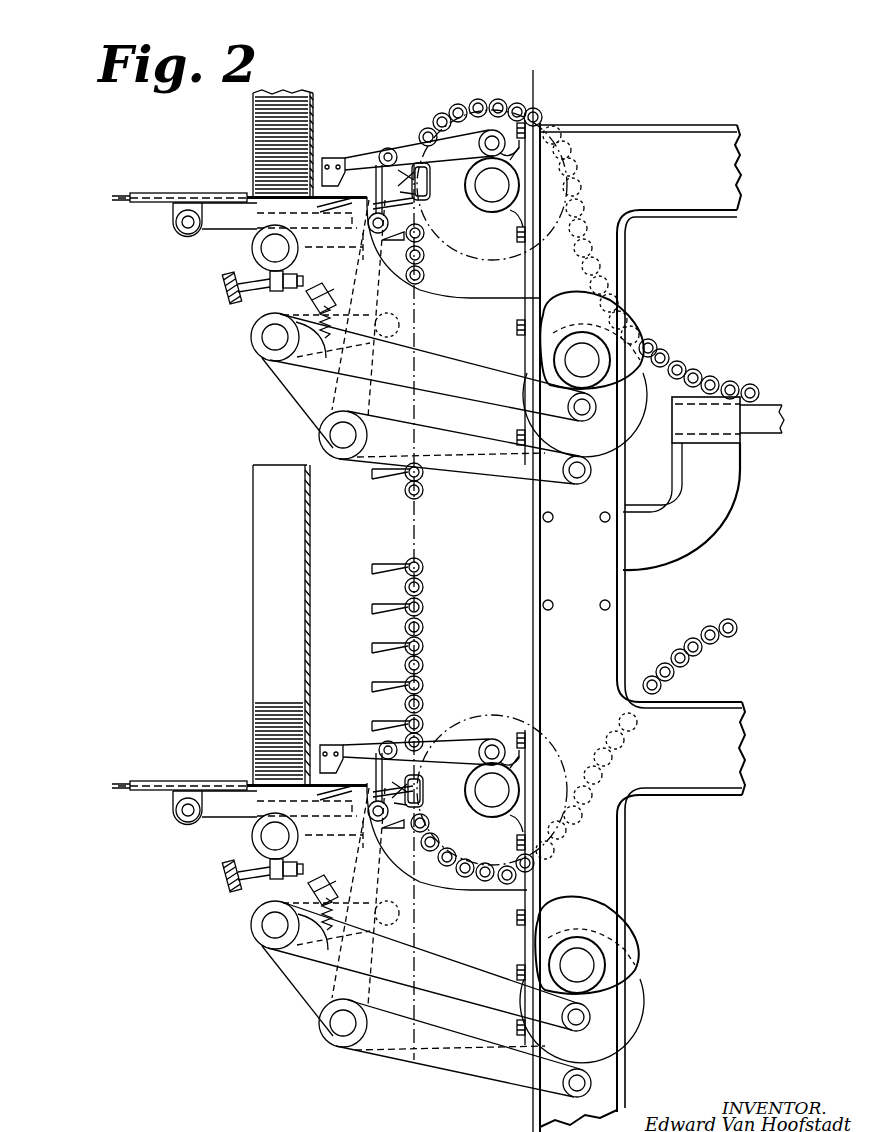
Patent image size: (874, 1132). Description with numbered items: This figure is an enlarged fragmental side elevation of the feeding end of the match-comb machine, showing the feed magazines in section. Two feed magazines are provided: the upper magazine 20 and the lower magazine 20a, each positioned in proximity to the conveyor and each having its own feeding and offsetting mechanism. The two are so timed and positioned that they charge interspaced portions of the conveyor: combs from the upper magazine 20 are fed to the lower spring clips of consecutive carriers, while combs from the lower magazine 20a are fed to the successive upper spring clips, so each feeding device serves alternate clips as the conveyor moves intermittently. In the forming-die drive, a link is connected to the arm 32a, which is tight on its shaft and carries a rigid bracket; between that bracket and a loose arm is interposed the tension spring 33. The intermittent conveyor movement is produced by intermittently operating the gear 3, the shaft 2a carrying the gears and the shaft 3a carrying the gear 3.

The upper feed magazine 20 is at (312, 124).
The lower feed magazine 20a is at (311, 534).
The shaft 2a is at (500, 185).
The arm 32a is at (325, 295).
The tension spring 33 is at (320, 360).
The gear 3 is at (470, 718).
The shaft 3a is at (497, 790).